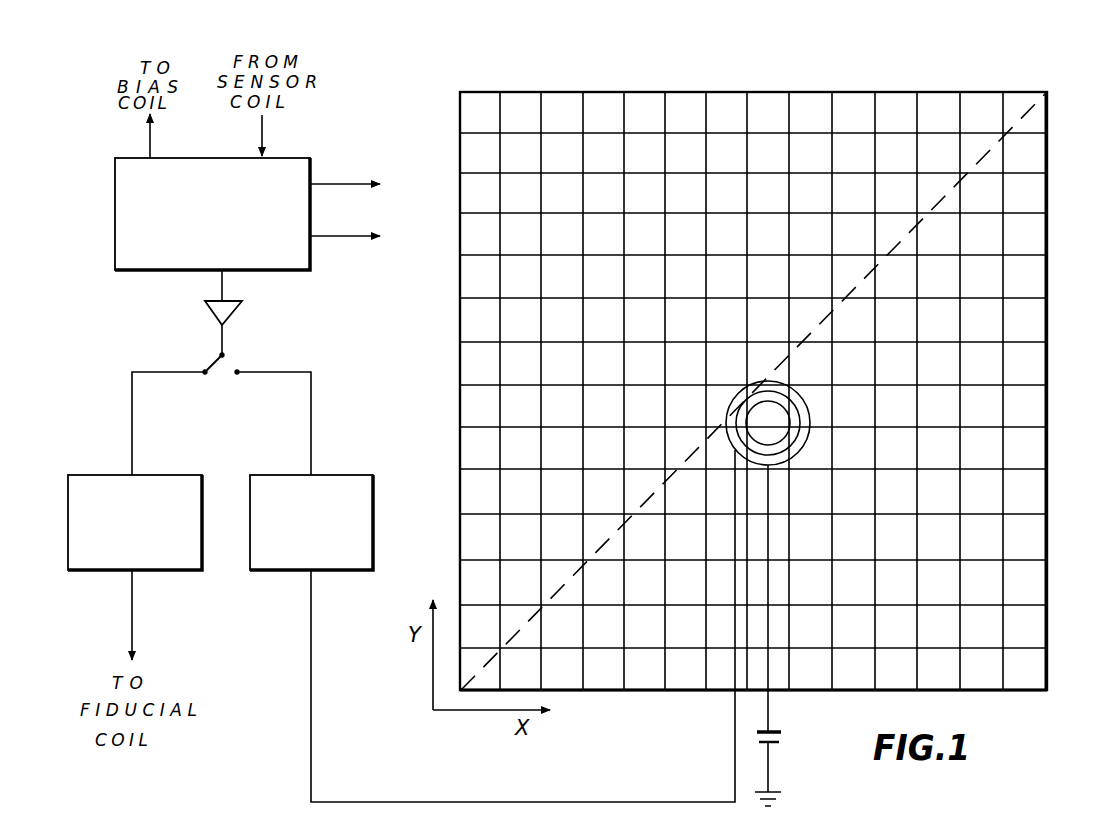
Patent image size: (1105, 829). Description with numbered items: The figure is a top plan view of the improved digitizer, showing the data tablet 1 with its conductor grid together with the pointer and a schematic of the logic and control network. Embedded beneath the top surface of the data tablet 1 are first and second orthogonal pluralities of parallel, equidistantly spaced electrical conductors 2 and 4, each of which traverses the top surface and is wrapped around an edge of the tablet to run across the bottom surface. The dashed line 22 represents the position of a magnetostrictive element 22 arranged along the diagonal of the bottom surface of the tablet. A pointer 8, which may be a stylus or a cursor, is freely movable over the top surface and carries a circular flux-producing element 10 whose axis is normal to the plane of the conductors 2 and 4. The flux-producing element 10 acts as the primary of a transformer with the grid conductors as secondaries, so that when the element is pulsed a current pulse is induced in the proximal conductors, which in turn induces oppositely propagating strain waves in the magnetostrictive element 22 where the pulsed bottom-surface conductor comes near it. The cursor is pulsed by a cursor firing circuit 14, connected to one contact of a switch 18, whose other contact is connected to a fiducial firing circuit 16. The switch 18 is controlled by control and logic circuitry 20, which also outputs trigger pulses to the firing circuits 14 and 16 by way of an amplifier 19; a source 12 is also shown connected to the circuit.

The data tablet 1 is at (781, 391).
The electrical conductors 2 is at (1022, 296).
The electrical conductors 4 is at (963, 497).
The pointer 8 is at (797, 402).
The flux-producing element 10 is at (800, 413).
The bias voltage source 12 is at (782, 740).
The cursor firing circuit 14 is at (351, 564).
The fiducial firing circuit 16 is at (93, 564).
The switch 18 is at (212, 362).
The amplifier 19 is at (236, 312).
The control and logic circuitry 20 is at (115, 242).
The magnetostrictive element 22 is at (1030, 112).